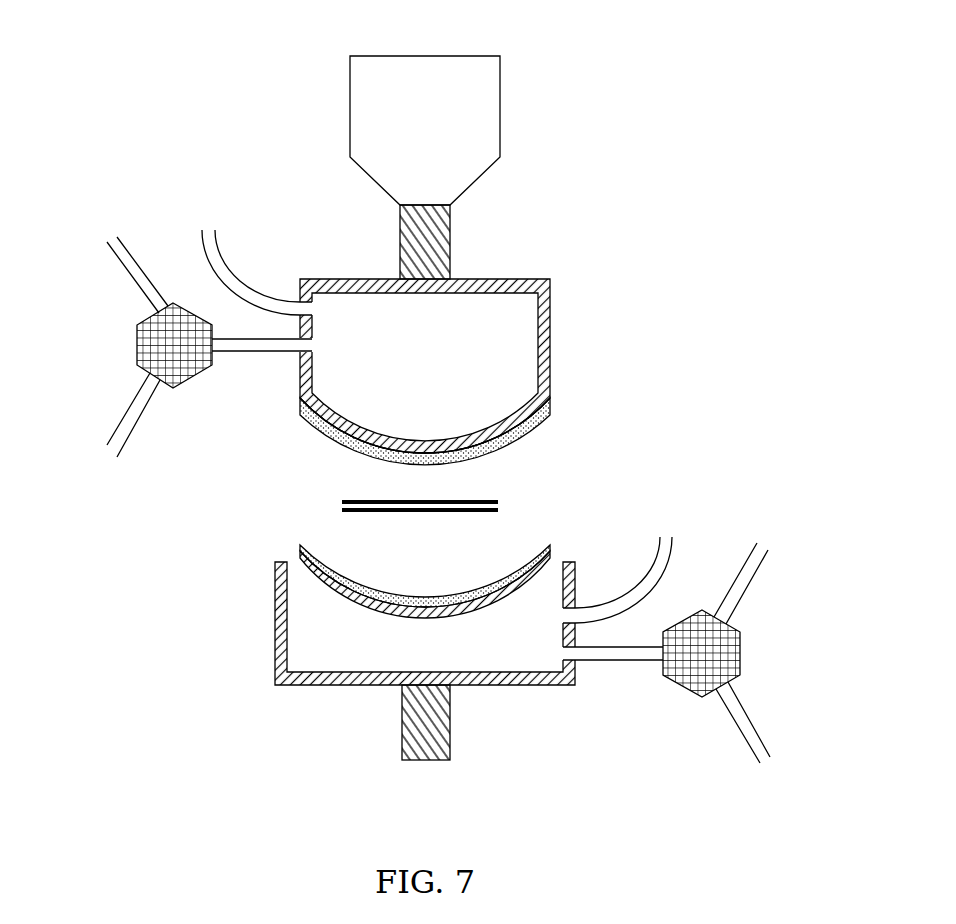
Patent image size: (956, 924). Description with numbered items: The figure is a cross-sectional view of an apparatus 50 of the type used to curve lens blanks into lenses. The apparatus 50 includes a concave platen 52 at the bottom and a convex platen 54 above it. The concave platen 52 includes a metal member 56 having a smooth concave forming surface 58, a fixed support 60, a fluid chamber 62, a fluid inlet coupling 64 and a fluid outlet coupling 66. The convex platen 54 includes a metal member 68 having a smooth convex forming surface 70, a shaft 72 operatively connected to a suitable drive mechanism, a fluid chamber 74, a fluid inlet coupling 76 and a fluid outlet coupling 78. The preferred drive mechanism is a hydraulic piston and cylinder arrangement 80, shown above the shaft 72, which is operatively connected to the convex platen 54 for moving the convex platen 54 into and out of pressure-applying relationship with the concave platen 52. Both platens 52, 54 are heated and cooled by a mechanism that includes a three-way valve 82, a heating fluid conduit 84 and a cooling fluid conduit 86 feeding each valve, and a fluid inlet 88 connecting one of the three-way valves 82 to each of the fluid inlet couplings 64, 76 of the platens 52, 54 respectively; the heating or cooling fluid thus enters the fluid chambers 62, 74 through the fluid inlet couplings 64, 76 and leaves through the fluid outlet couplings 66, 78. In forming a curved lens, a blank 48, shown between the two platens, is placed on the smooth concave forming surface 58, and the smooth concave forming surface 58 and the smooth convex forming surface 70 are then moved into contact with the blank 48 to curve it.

The blank 48 is at (498, 505).
The apparatus 50 is at (112, 54).
The concave platen 52 is at (373, 647).
The convex platen 54 is at (478, 315).
The metal member 56 is at (300, 553).
The smooth concave forming surface 58 is at (408, 593).
The fixed support 60 is at (415, 737).
The fluid chamber 62 is at (300, 656).
The fluid inlet coupling 64 is at (560, 653).
The fluid outlet coupling 66 is at (560, 613).
The metal member 68 is at (551, 417).
The smooth convex forming surface 70 is at (405, 462).
The shaft 72 is at (423, 240).
The fluid chamber 74 is at (477, 348).
The fluid inlet coupling 76 is at (313, 345).
The fluid outlet coupling 78 is at (313, 310).
The hydraulic piston and cylinder arrangement 80 is at (460, 97).
The three-way valve 82 is at (137, 331).
The heating fluid conduit 84 is at (108, 443).
The cooling fluid conduit 86 is at (110, 252).
The fluid inlet 88 is at (255, 353).